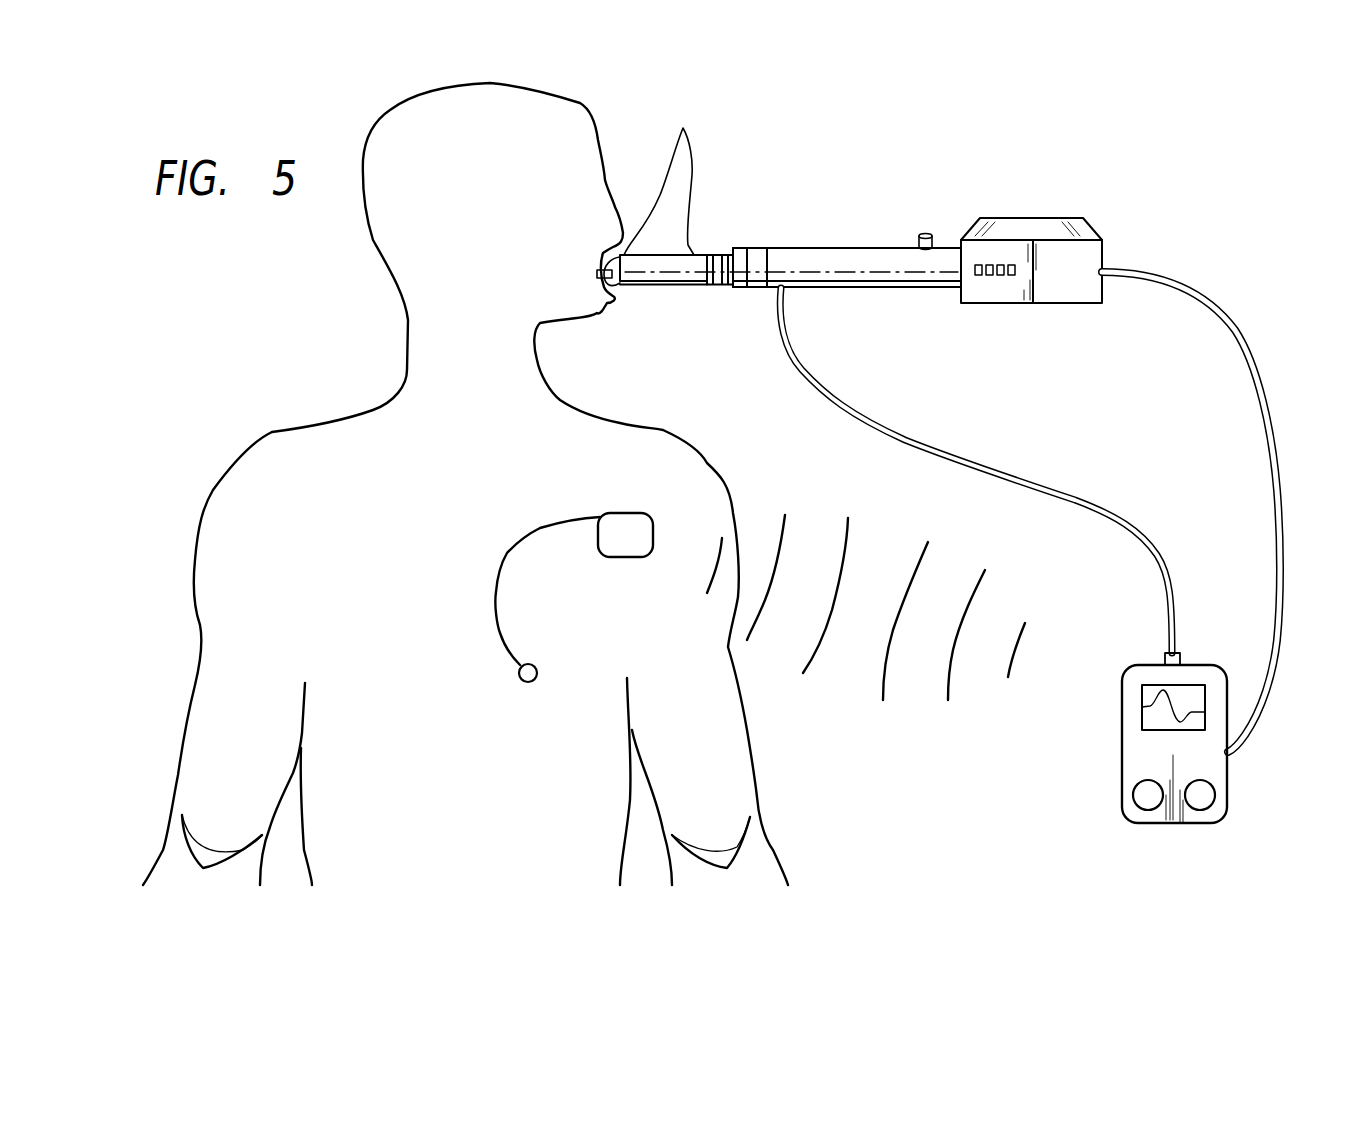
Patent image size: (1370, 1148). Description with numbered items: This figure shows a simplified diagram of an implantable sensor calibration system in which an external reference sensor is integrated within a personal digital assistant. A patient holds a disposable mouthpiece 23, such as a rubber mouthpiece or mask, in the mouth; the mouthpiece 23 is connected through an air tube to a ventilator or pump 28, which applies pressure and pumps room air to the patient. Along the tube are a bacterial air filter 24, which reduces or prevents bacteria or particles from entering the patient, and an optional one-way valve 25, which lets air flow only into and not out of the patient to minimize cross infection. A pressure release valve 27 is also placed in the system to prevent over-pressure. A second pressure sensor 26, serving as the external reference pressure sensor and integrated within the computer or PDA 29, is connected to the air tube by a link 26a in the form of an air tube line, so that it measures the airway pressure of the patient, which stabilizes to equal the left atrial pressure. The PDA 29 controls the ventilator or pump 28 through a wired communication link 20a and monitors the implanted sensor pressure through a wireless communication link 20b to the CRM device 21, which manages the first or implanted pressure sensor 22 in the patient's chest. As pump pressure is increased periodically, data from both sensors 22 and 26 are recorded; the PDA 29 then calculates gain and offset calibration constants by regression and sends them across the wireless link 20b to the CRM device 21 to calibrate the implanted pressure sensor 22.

The communication link 20a is at (1250, 350).
The wireless communication link 20b is at (762, 625).
The CRM device 21 is at (647, 516).
The implanted pressure sensor 22 is at (522, 681).
The disposable mouthpiece 23 is at (663, 191).
The bacterial air filter 24 is at (712, 257).
The one-way valve 25 is at (763, 248).
The second pressure sensor 26 is at (1162, 655).
The link 26a is at (967, 455).
The pressure release valve 27 is at (923, 251).
The ventilator or pump 28 is at (1063, 303).
The computer or personal digital assistant (PDA) 29 is at (1177, 823).